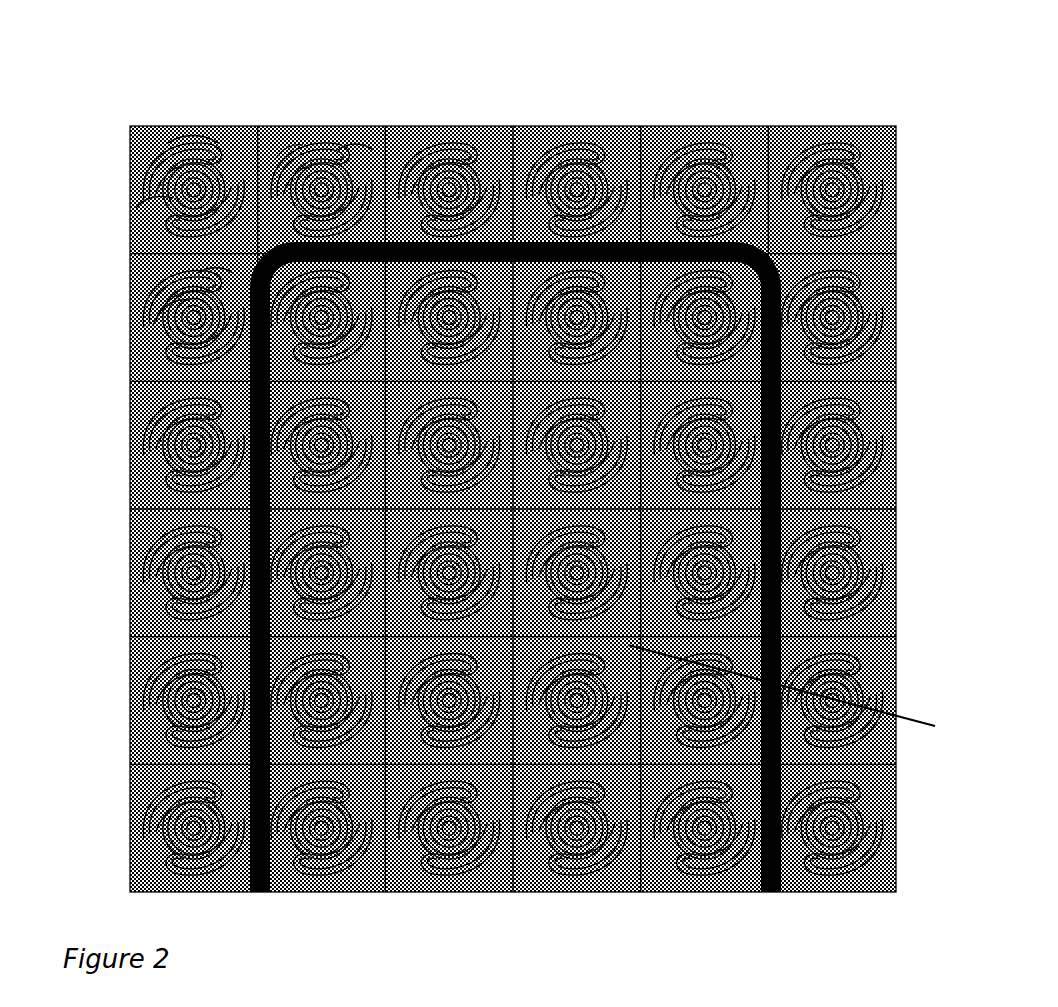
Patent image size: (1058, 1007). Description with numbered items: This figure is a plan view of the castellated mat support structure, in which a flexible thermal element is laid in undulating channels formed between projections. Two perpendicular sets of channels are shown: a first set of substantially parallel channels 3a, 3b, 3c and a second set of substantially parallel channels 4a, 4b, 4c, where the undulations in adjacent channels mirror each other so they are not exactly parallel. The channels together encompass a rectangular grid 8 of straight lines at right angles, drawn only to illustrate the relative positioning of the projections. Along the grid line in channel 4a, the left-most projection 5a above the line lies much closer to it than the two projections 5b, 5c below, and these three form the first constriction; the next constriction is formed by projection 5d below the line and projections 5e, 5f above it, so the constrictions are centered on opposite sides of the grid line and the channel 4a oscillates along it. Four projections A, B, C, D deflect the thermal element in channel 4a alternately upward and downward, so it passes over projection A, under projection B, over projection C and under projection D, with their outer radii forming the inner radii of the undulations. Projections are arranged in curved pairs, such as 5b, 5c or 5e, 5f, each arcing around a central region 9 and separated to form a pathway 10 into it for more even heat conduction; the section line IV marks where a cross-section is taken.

The projection A is at (255, 243).
The projection B is at (470, 200).
The projection C is at (600, 270).
The projection D is at (727, 185).
The channel of the first set 3a is at (248, 100).
The channel of the first set 3b is at (378, 100).
The channel of the first set 3c is at (503, 103).
The channel of the second set 4a is at (112, 248).
The channel of the second set 4b is at (112, 372).
The channel of the second set 4c is at (112, 498).
The projection 5a is at (130, 197).
The projection 5b is at (147, 325).
The projection 5c is at (193, 268).
The projection 5d is at (168, 128).
The projection 5e is at (277, 140).
The projection 5f is at (341, 135).
The rectangular grid 8 is at (122, 630).
The central region 9 is at (717, 863).
The pathway 10 is at (702, 853).
The section line IV- IV is at (783, 686).